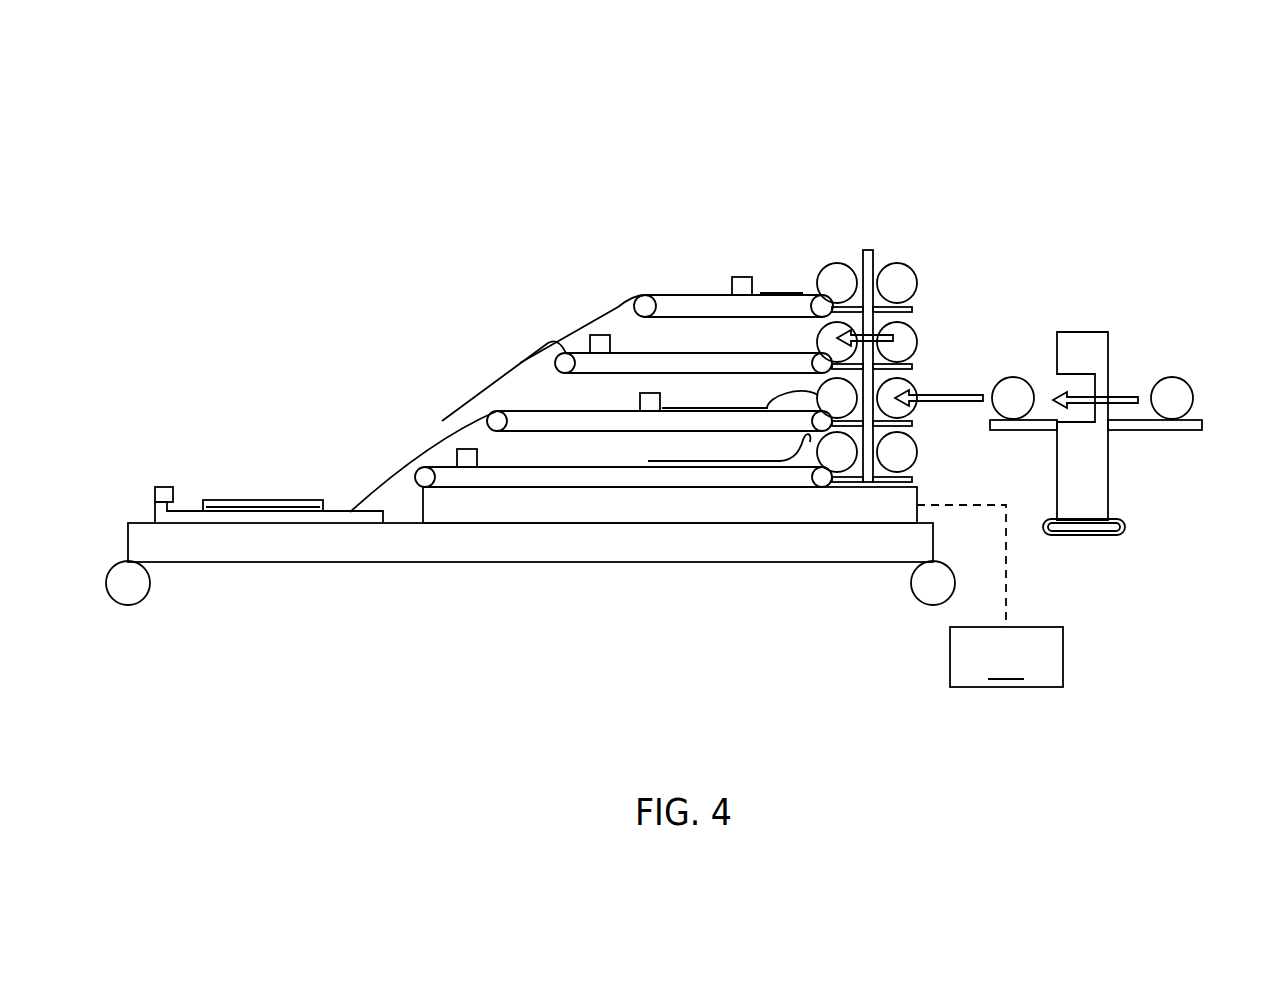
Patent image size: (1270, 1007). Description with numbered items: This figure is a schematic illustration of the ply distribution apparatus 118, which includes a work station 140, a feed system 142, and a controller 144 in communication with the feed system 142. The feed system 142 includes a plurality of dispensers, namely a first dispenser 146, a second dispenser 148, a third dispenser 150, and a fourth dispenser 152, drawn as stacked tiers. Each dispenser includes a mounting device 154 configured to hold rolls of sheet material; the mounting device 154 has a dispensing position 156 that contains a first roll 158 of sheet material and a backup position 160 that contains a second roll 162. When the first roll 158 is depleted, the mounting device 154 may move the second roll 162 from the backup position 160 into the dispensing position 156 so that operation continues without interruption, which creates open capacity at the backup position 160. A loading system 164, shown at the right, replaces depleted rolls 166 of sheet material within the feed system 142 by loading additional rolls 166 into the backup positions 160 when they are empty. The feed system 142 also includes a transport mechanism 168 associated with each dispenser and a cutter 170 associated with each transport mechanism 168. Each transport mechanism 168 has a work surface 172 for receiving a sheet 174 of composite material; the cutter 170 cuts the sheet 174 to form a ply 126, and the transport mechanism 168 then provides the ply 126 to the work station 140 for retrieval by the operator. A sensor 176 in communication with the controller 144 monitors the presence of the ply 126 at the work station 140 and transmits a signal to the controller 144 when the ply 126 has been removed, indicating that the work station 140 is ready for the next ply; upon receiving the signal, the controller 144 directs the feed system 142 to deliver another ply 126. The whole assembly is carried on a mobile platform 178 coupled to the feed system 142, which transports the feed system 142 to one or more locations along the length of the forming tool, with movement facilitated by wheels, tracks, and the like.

The ply distribution apparatus 118 is at (1127, 140).
The ply 126 is at (272, 500).
The work station 140 is at (193, 404).
The feed system 142 is at (588, 155).
The controller 144 is at (990, 596).
The first dispenser 146 is at (627, 283).
The second dispenser 148 is at (572, 342).
The third dispenser 150 is at (524, 396).
The fourth dispenser 152 is at (442, 446).
The mounting device 154 is at (896, 190).
The dispensing position 156 is at (829, 242).
The first roll 158 is at (840, 262).
The backup position 160 is at (927, 228).
The second roll 162 is at (898, 282).
The loading system 164 is at (1128, 275).
The rolls 166 is at (1013, 377).
The transport mechanism 168 is at (745, 318).
The cutter 170 is at (611, 337).
The work surface 172 is at (693, 353).
The sheet 174 is at (803, 293).
The sensor 176 is at (160, 487).
The mobile platform 178 is at (278, 563).